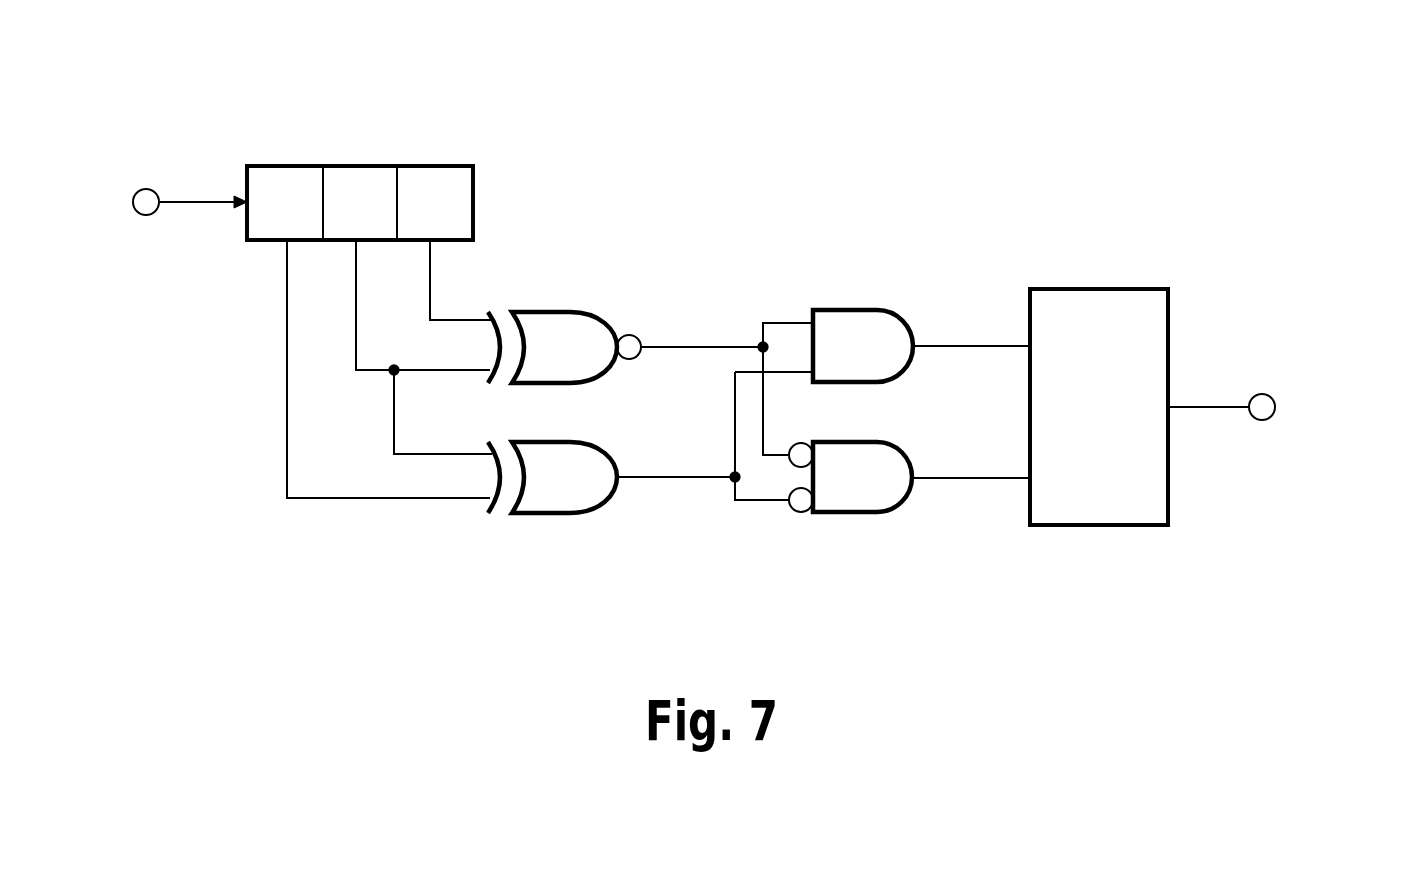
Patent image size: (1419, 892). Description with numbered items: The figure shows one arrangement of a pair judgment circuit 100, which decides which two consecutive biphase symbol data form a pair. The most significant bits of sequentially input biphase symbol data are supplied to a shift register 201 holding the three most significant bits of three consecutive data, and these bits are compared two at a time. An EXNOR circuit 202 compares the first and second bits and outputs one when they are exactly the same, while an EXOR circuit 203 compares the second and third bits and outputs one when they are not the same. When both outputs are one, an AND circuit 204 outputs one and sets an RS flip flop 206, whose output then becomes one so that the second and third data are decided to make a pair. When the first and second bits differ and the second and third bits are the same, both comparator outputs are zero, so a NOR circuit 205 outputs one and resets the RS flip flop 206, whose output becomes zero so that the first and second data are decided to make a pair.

The pair judgment circuit 100 is at (908, 107).
The shift register 201 is at (363, 175).
The EXNOR circuit 202 is at (560, 320).
The EXOR circuit 203 is at (553, 500).
The AND circuit 204 is at (865, 318).
The NOR circuit 205 is at (848, 507).
The RS flip flop 206 is at (1107, 300).